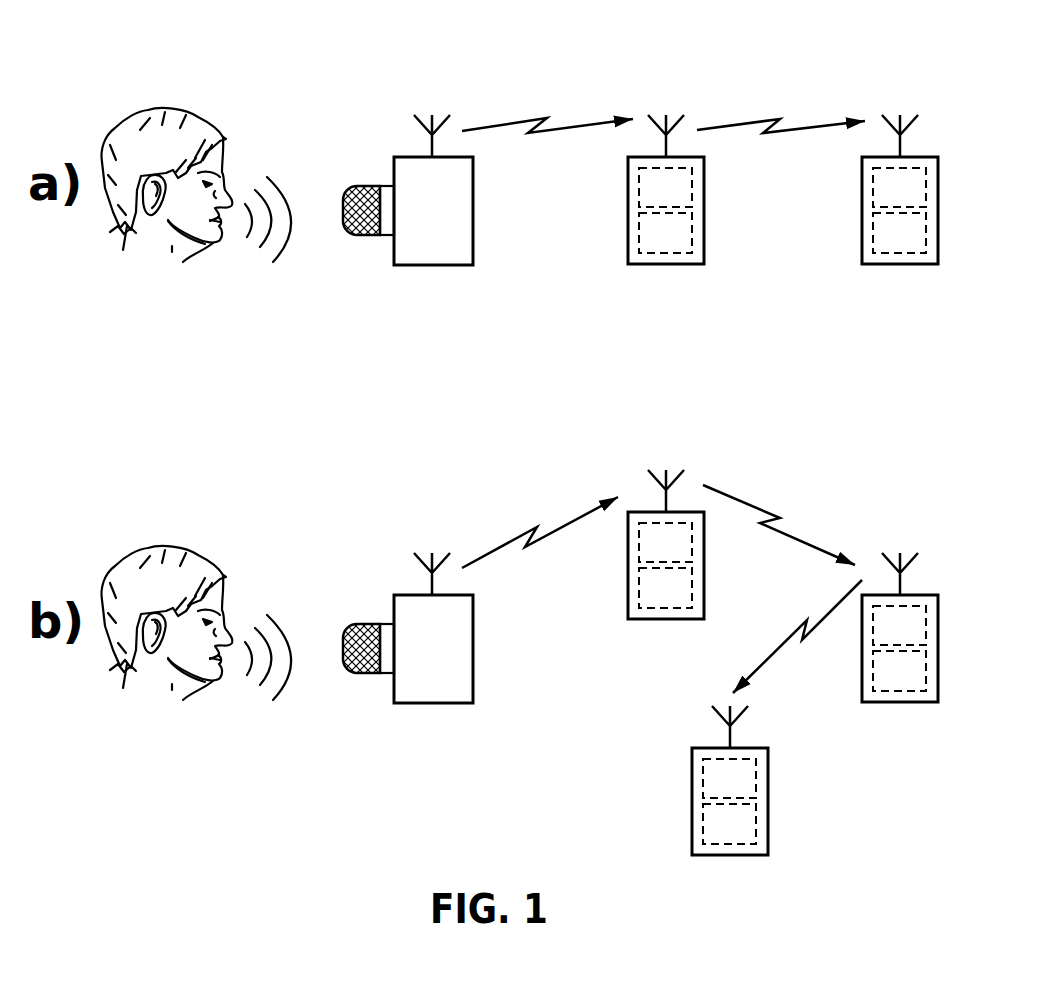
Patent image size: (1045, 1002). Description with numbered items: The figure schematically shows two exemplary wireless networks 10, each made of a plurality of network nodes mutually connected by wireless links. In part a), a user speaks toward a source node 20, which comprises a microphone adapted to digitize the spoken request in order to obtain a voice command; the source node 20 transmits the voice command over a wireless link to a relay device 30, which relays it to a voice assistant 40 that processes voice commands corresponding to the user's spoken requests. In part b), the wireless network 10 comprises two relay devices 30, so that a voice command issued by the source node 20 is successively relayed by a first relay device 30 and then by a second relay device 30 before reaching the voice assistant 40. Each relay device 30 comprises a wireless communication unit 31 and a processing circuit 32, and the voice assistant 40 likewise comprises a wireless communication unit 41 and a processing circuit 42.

The wireless network 10 is at (533, 88).
The source node 20 is at (452, 265).
The relay device 30 is at (790, 441).
The wireless communication unit 31 is at (782, 406).
The processing circuit 32 is at (782, 452).
The voice assistant 40 is at (822, 518).
The wireless communication unit 41 is at (814, 483).
The processing circuit 42 is at (814, 528).